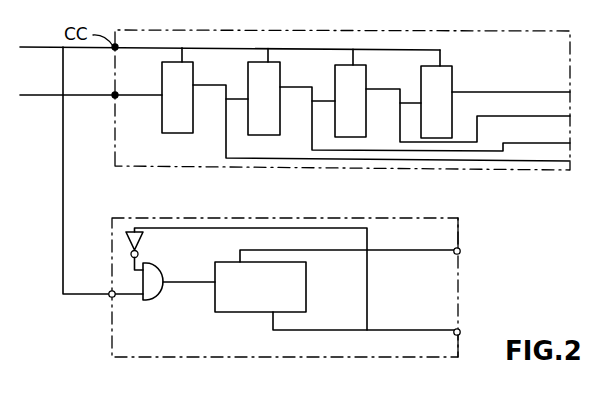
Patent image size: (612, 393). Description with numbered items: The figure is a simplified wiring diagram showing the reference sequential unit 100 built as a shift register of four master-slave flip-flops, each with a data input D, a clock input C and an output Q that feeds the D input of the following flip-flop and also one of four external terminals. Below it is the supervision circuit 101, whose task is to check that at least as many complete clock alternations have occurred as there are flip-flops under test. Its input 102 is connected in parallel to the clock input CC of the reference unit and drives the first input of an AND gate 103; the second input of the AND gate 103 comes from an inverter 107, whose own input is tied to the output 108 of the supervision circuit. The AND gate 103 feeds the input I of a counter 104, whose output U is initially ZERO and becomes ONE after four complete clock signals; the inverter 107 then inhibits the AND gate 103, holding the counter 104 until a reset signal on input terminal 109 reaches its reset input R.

The reference sequential unit 100 is at (551, 19).
The supervision circuit 101 is at (440, 355).
The input 102 is at (93, 307).
The AND gate 103 is at (179, 293).
The counter 104 is at (336, 291).
The inverter 107 is at (246, 279).
The output 108 is at (474, 335).
The input terminal 109 is at (476, 236).